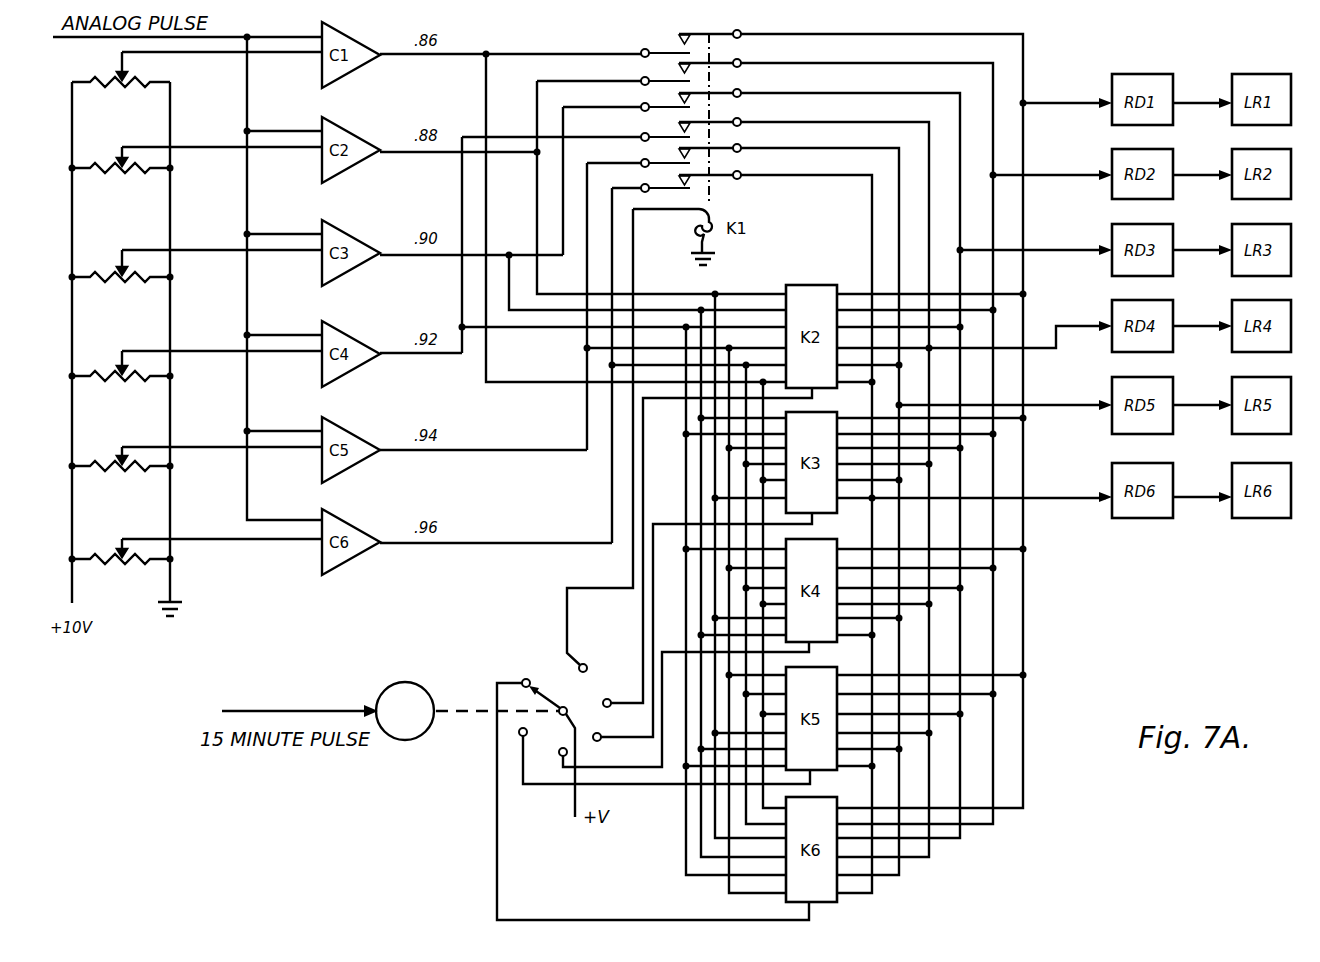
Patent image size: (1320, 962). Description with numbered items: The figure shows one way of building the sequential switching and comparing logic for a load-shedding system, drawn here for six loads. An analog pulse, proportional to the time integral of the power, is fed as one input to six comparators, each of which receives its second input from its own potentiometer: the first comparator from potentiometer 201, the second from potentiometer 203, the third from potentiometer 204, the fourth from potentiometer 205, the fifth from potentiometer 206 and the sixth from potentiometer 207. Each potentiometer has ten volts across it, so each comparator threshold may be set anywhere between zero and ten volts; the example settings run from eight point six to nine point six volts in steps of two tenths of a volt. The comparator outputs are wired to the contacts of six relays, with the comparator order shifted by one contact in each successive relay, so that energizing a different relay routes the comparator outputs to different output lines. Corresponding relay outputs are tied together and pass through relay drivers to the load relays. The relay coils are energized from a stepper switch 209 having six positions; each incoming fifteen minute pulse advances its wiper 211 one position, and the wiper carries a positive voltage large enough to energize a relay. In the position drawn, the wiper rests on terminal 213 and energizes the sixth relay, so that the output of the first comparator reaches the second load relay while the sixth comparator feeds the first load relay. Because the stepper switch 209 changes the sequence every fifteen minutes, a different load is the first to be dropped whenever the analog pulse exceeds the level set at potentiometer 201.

The potentiometer 201 is at (121, 88).
The potentiometer 203 is at (113, 174).
The potentiometer 204 is at (113, 283).
The potentiometer 205 is at (113, 382).
The potentiometer 206 is at (113, 472).
The potentiometer 207 is at (113, 565).
The stepper switch 209 is at (629, 779).
The wiper 211 is at (552, 704).
The terminal 213 is at (530, 678).